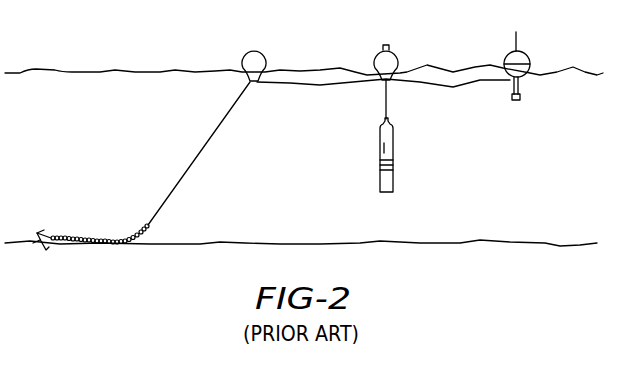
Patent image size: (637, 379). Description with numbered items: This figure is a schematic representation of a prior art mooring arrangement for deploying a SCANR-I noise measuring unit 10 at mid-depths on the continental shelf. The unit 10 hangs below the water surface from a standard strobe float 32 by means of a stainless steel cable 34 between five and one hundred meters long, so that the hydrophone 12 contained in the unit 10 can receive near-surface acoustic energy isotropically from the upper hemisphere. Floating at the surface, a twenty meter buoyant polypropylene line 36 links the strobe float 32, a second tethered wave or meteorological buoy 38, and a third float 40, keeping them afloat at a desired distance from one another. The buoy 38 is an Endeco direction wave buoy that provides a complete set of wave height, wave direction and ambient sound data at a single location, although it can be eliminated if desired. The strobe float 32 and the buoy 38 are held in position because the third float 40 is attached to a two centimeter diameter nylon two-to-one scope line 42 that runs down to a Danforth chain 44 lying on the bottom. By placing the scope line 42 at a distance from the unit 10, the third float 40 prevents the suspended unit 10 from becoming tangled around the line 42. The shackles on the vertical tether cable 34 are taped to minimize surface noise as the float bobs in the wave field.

The SCANR-I unit 10 is at (370, 172).
The hydrophone 12 is at (383, 147).
The strobe float 32 is at (398, 56).
The stainless steel cable 34 is at (388, 108).
The buoyant polypropylene line 36 is at (313, 85).
The wave or meteorological buoy 38 is at (529, 58).
The third float 40 is at (257, 49).
The nylon scope line 42 is at (191, 167).
The Danforth chain 44 is at (92, 237).